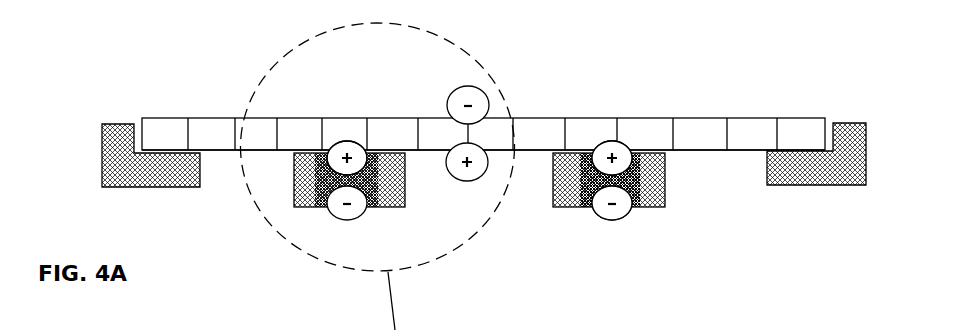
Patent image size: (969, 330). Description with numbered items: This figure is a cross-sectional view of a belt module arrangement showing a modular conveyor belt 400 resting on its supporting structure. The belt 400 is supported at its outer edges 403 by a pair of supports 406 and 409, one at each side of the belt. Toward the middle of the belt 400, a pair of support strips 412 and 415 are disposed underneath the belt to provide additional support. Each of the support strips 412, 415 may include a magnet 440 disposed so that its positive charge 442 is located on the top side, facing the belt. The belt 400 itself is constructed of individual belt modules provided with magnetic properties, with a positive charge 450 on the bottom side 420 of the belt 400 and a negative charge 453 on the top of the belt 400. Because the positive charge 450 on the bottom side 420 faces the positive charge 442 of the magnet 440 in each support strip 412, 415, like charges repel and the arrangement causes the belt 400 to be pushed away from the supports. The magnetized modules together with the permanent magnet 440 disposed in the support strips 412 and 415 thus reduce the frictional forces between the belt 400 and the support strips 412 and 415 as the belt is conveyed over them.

The modular conveyor belt 400 is at (706, 137).
The outer edges 403 is at (149, 113).
The support 406 is at (117, 163).
The support 409 is at (857, 164).
The support strip 412 is at (294, 193).
The support strip 415 is at (565, 190).
The bottom side 420 is at (740, 153).
The magnet 440 is at (385, 210).
The positive charge 442 is at (338, 150).
The positive charge 450 is at (465, 179).
The negative charge 453 is at (482, 97).